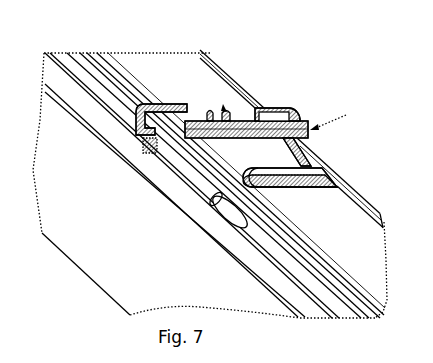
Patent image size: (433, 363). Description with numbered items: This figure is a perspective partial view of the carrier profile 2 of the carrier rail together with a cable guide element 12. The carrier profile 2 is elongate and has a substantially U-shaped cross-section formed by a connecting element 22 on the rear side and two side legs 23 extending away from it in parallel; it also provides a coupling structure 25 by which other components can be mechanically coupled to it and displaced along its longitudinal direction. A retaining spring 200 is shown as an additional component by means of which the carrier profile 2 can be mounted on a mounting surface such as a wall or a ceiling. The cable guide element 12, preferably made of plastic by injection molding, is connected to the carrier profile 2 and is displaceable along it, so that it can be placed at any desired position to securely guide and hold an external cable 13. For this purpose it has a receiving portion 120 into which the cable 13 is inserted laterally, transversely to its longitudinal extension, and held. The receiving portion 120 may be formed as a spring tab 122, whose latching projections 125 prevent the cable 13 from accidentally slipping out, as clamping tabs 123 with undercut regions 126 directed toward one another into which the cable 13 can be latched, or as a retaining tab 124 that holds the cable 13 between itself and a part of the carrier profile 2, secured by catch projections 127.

The carrier profile 2 is at (50, 187).
The cable guide element 12 is at (336, 116).
The cable 13 is at (128, 76).
The connecting element 22 is at (382, 210).
The side leg 23 is at (83, 247).
The coupling structure 25 is at (345, 311).
The receiving portion 120 is at (220, 108).
The spring tab 122 is at (302, 110).
The clamping tab 123 is at (221, 63).
The retaining tab 124 is at (133, 134).
The latching projection 125 is at (262, 107).
The undercut region 126 is at (208, 106).
The catch projection 127 is at (306, 142).
The retaining spring 200 is at (257, 168).